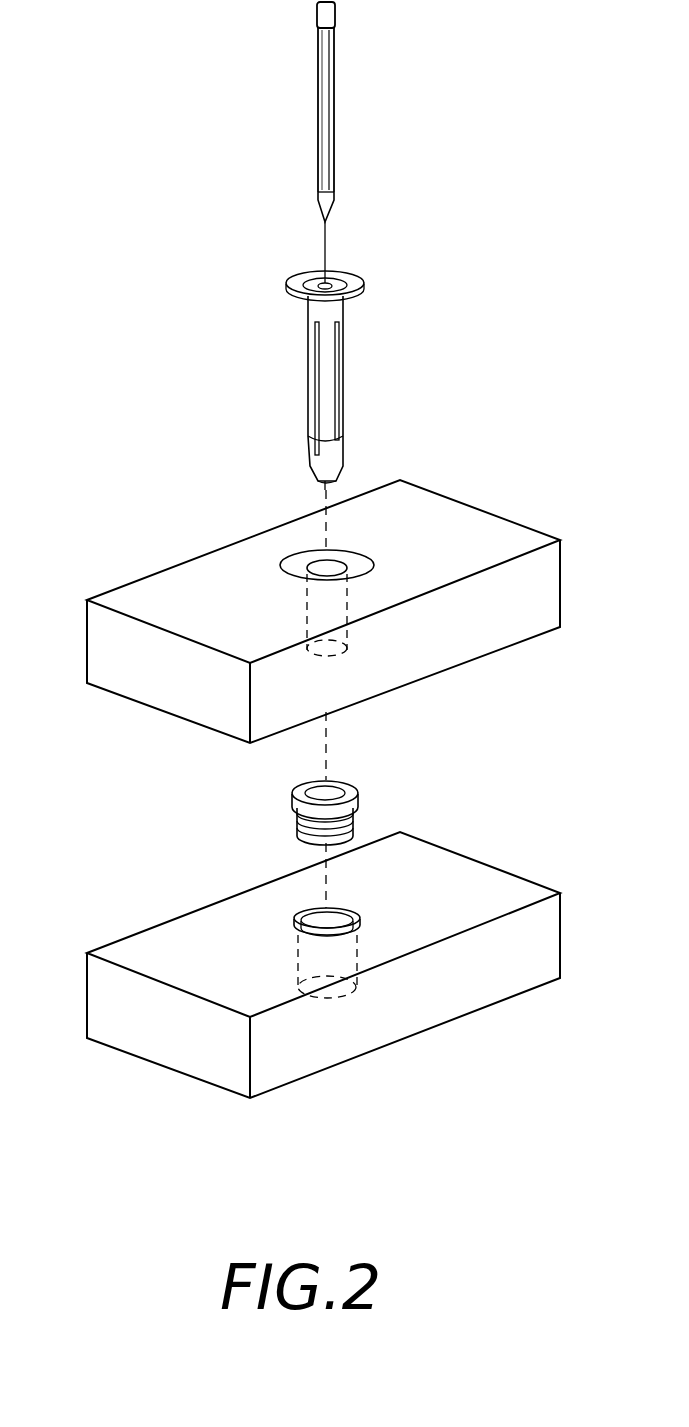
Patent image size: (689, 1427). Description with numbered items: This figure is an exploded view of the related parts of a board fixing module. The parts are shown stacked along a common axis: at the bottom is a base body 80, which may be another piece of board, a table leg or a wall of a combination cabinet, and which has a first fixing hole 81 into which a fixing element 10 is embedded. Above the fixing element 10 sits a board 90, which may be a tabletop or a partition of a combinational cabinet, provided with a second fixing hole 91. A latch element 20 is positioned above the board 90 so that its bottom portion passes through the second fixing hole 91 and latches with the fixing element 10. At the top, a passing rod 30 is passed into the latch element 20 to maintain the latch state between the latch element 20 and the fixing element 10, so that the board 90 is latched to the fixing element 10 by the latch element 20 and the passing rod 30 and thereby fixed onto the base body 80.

The fixing element 10 is at (357, 784).
The latch element 20 is at (308, 380).
The passing rod 30 is at (336, 99).
The base body 80 is at (157, 1048).
The first fixing hole 81 is at (310, 918).
The board 90 is at (157, 597).
The second fixing hole 91 is at (337, 562).